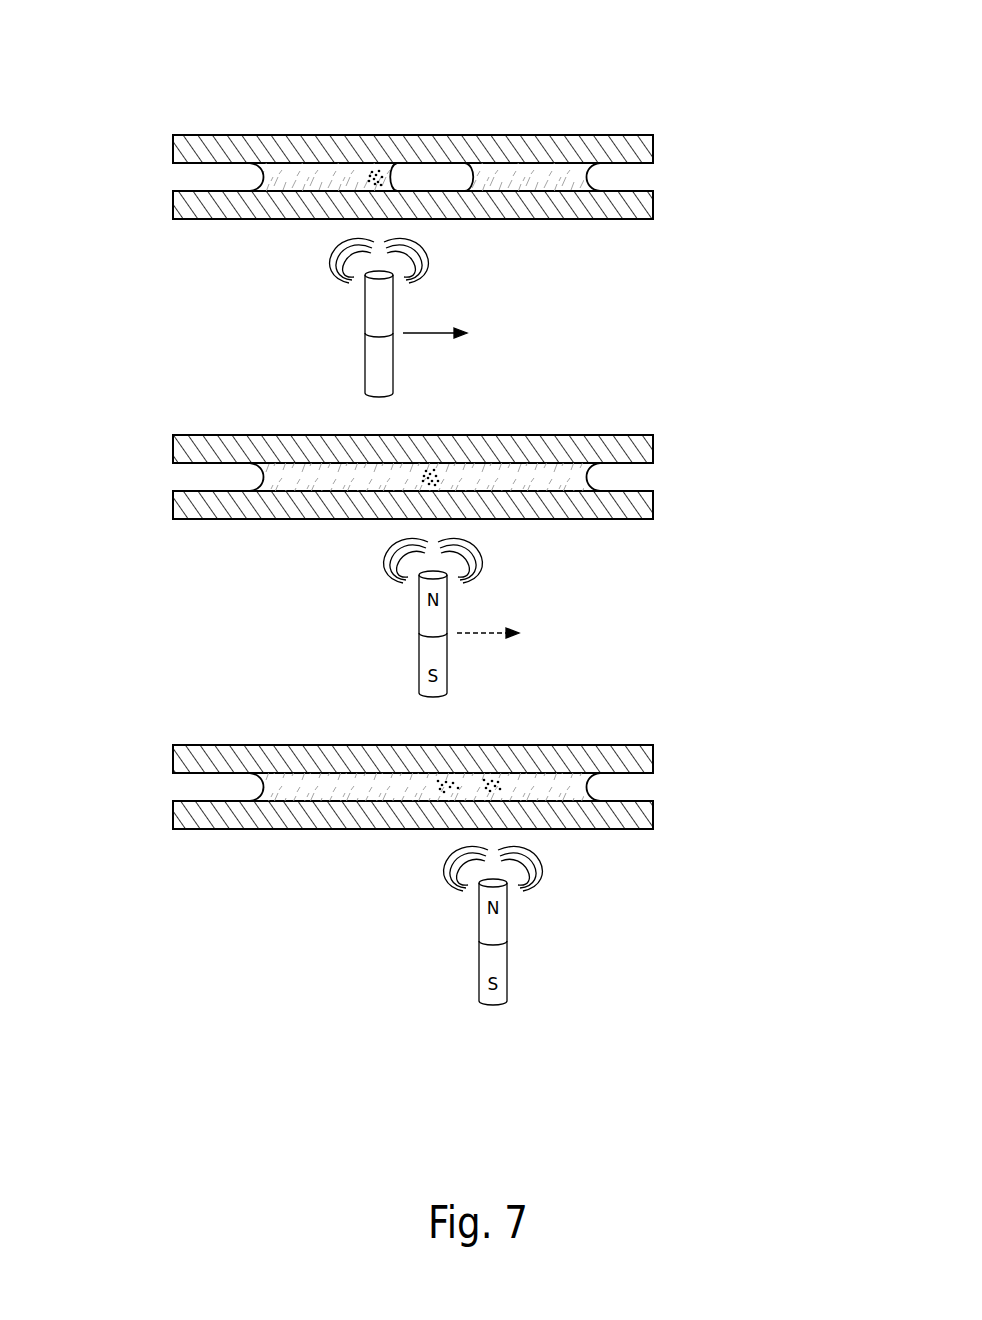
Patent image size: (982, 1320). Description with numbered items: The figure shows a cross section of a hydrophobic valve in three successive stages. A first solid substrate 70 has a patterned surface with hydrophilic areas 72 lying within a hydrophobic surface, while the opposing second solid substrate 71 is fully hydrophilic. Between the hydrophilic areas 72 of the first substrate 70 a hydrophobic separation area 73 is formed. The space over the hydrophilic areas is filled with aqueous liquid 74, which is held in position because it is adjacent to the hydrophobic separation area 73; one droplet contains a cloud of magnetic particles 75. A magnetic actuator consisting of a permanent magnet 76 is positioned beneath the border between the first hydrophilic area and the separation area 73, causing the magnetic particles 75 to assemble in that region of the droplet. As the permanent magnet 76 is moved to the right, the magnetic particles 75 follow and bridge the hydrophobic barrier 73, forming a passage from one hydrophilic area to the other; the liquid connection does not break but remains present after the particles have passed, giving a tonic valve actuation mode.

The first solid substrate 70 is at (655, 200).
The second solid substrate 71 is at (172, 135).
The hydrophilic areas 72 is at (601, 222).
The separation area 73 is at (436, 191).
The aqueous liquid 74 is at (310, 135).
The magnetic particles 75 is at (380, 137).
The permanent magnet 76 is at (363, 302).